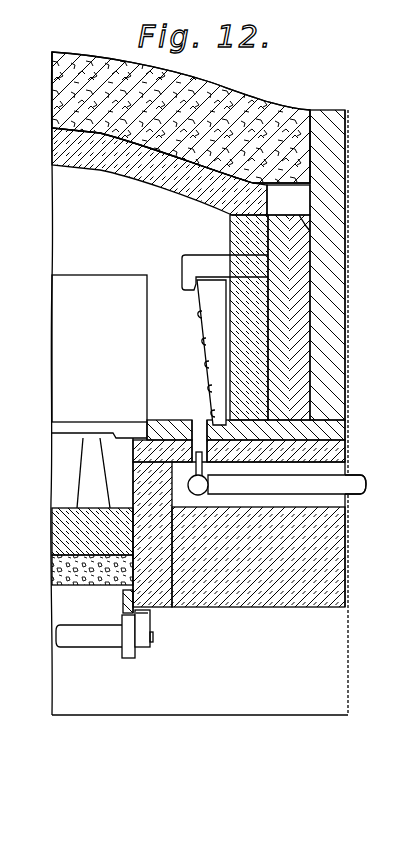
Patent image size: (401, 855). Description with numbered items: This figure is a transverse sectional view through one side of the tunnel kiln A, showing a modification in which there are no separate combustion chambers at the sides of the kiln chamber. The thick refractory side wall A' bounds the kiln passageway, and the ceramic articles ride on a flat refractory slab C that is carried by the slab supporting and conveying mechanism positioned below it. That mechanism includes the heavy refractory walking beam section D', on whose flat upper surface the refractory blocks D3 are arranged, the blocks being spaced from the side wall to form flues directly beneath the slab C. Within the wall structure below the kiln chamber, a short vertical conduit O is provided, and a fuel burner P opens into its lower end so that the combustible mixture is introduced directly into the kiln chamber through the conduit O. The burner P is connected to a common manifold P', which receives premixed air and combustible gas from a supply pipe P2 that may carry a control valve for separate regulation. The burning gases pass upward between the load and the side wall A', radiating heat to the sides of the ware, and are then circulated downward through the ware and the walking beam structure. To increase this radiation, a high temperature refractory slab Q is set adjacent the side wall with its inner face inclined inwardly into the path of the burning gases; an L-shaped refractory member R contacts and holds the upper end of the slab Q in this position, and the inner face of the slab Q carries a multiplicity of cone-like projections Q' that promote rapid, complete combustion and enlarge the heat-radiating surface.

The tunnel kiln A is at (341, 412).
The side wall A' is at (320, 317).
The slab C is at (58, 433).
The refractory block D3 is at (83, 468).
The walking beam section D' is at (71, 546).
The conduit O is at (195, 420).
The fuel burner P is at (284, 481).
The manifold P' is at (197, 493).
The supply pipe P2 is at (358, 473).
The refractory slab Q is at (193, 352).
The cone-like projection Q' is at (186, 364).
The L-shaped refractory member R is at (197, 256).